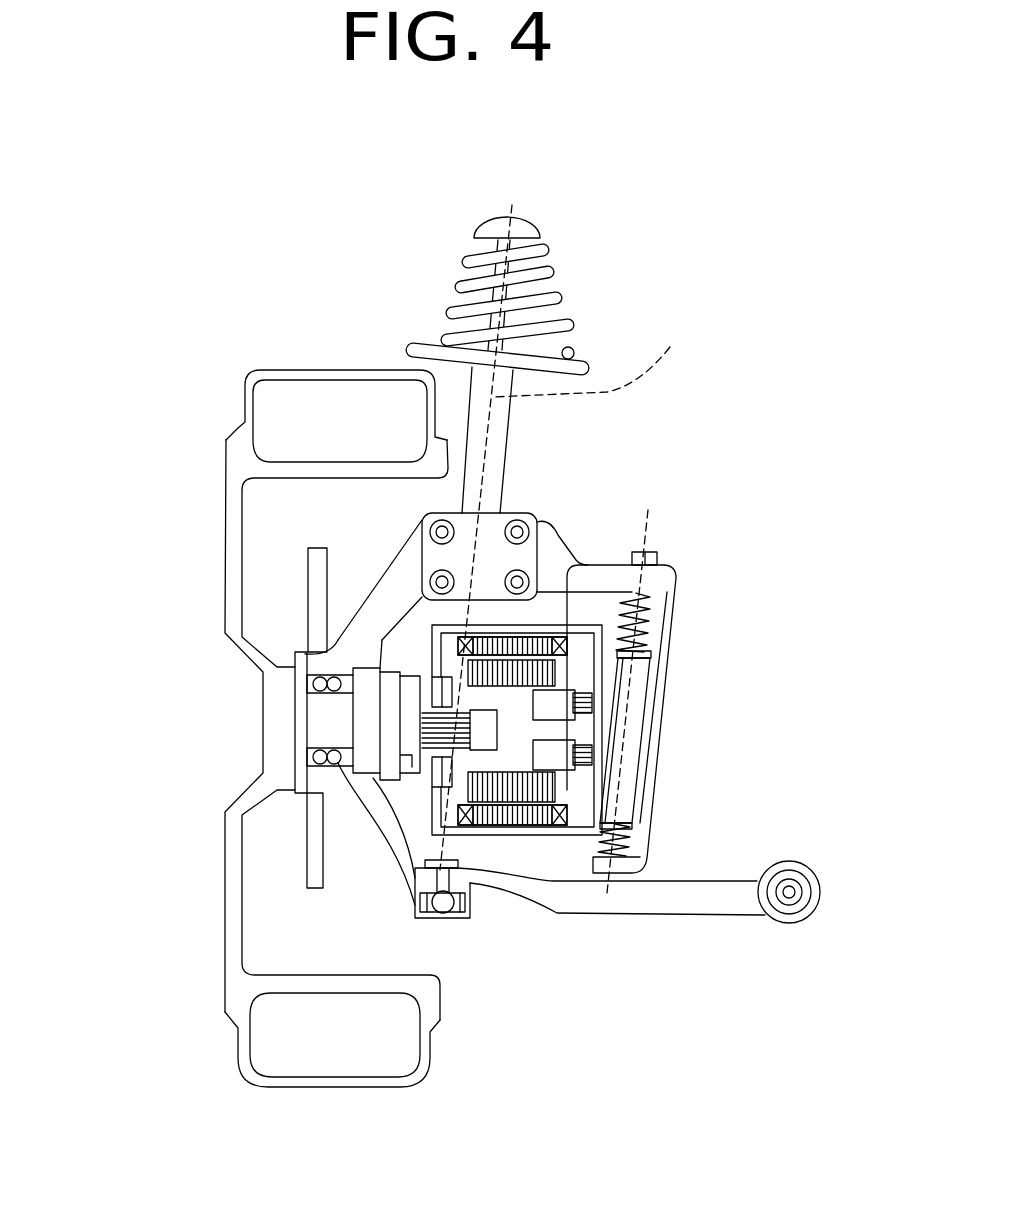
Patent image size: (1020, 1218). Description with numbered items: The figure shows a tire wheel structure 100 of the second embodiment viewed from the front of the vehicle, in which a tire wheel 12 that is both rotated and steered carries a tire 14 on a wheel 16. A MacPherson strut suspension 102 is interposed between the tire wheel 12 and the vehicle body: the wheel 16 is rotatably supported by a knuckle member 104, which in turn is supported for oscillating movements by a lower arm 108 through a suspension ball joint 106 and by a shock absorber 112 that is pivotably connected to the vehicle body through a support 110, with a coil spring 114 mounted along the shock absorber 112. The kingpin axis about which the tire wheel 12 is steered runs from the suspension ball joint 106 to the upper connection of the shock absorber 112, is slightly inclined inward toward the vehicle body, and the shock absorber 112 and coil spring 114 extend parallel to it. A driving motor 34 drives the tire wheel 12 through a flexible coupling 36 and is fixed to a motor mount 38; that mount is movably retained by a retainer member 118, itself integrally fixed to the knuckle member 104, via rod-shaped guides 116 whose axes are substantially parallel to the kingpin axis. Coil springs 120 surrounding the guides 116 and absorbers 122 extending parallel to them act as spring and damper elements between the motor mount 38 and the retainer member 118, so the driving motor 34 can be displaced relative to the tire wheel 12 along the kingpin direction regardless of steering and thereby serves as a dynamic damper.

The tire wheel 12 is at (124, 830).
The tire 14 is at (238, 1050).
The wheel 16 is at (225, 823).
The driving motor 34 is at (557, 793).
The flexible coupling 36 is at (392, 790).
The motor mount 38 is at (567, 572).
The tire wheel structure 100 is at (680, 420).
The MacPherson strut suspension 102 is at (610, 282).
The knuckle member 104 is at (385, 570).
The suspension ball joint 106 is at (455, 920).
The lower arm 108 is at (577, 917).
The support 110 is at (507, 220).
The shock absorber 112 is at (508, 452).
The coil spring 114 is at (462, 285).
The rod-shaped guide 116 is at (652, 592).
The retainer member 118 is at (668, 667).
The coil spring 120 is at (652, 620).
The absorber 122 is at (648, 703).